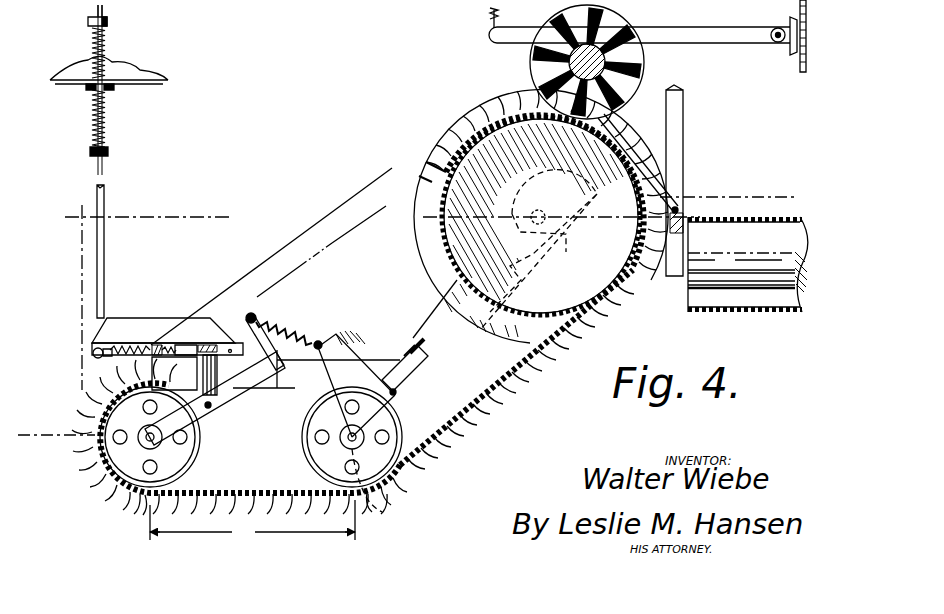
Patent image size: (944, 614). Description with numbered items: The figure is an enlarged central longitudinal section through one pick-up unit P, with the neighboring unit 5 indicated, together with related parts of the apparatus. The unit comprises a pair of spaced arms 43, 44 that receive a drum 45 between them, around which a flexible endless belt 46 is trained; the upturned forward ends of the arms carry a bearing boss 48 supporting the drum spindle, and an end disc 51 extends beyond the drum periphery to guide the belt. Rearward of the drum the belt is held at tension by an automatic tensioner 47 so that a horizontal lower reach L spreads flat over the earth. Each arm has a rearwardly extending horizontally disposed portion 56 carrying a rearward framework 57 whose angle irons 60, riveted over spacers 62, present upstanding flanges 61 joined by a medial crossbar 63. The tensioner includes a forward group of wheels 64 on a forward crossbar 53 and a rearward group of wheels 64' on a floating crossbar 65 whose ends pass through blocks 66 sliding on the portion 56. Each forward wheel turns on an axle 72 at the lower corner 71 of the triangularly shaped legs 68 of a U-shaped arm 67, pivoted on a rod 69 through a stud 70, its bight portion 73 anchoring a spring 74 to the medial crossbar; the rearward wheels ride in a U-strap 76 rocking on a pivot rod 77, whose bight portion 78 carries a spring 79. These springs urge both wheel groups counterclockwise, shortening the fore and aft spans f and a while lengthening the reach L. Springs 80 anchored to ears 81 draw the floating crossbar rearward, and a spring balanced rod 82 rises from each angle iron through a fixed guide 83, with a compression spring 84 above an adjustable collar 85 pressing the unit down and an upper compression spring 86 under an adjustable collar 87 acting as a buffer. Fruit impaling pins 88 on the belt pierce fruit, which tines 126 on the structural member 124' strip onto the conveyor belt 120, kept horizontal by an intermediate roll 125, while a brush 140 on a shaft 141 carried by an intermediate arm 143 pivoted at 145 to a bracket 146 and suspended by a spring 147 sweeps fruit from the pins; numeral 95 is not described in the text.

The pick-up unit 5 is at (25, 430).
The arm 43 is at (427, 334).
The arm 44 is at (392, 0).
The drum 45 is at (413, 252).
The endless belt 46 is at (405, 170).
The automatic tensioner 47 is at (300, 452).
The bearing boss 48 is at (560, 238).
The end disc 51 is at (432, 270).
The forward crossbar 53 is at (420, 355).
The rearwardly extending horizontally disposed portion 56 is at (313, 383).
The rearward framework 57 is at (170, 0).
The angle iron 60 is at (107, 326).
The upstanding flange 61 is at (144, 337).
The spacer 62 is at (157, 343).
The medial crossbar 63 is at (236, 344).
The forward group of wheels 64 is at (352, 437).
The rearward group of wheels 64' is at (150, 437).
The floating crossbar 65 is at (232, 345).
The block 66 is at (217, 360).
The U-shaped arm 67 is at (351, 336).
The triangularly shaped leg 68 is at (358, 380).
The rod 69 is at (398, 395).
The stud 70 is at (396, 362).
The lower corner 71 is at (380, 485).
The axle 72 is at (360, 442).
The bight portion 73 is at (319, 340).
The spring 74 is at (285, 328).
The U-strap 76 is at (242, 400).
The pivot rod 77 is at (211, 409).
The bight portion 78 is at (217, 398).
The spring 79 is at (251, 324).
The spring 80 is at (118, 356).
The ear 81 is at (93, 353).
The spring balanced rod 82 is at (102, 208).
The fixed guide 83 is at (86, 86).
The compression spring 84 is at (92, 124).
The adjustable collar 85 is at (90, 152).
The compression spring 86 is at (92, 45).
The adjustable collar 87 is at (88, 22).
The fruit impaling pin 88 is at (445, 462).
The frame 95 is at (340, 0).
The conveyor belt 120 is at (733, 214).
The structural member 124' is at (700, 180).
The intermediate roll 125 is at (748, 250).
The tine 126 is at (663, 178).
The brush 140 is at (648, 49).
The shaft 141 is at (638, 77).
The intermediate arm 143 is at (685, 33).
The pivot 145 is at (778, 44).
The bracket 146 is at (793, 20).
The spring 147 is at (489, 13).
The horizontal lower reach L is at (252, 522).
The pick-up unit P is at (282, 174).
The aft span a is at (336, 257).
The fore span f is at (546, 399).